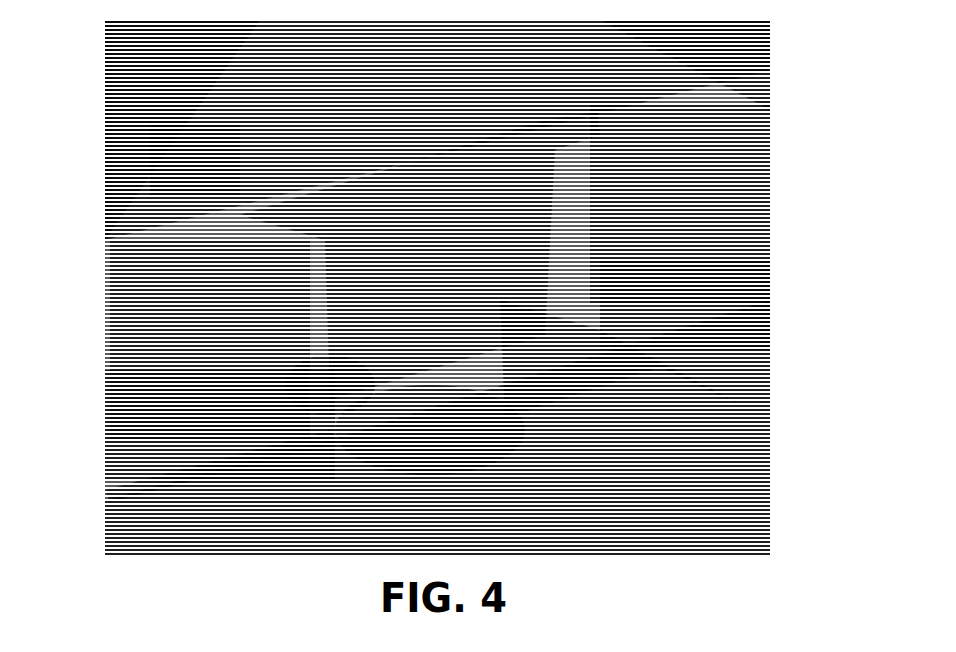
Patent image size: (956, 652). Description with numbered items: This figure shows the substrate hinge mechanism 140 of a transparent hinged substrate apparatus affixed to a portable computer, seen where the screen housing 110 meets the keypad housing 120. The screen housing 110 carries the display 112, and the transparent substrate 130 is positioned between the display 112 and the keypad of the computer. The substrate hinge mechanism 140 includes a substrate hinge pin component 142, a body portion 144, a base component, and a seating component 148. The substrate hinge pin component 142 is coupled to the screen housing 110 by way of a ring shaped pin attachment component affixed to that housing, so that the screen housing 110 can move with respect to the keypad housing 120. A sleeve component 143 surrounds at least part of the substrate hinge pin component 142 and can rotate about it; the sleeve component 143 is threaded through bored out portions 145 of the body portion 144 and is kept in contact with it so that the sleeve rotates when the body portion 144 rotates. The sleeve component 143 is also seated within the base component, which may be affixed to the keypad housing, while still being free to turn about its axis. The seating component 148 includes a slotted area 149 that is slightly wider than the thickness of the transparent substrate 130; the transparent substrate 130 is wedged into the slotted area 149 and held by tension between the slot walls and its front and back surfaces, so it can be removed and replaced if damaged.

The screen housing 110 is at (770, 110).
The display 112 is at (105, 130).
The keypad housing 120 is at (740, 443).
The transparent substrate 130 is at (415, 78).
The substrate hinge mechanism 140 is at (190, 67).
The substrate hinge pin component 142 is at (222, 485).
The sleeve component 143 is at (733, 340).
The body portion 144 is at (455, 236).
The bored out portions 145 is at (343, 360).
The seating component 148 is at (680, 205).
The slotted area 149 is at (195, 160).